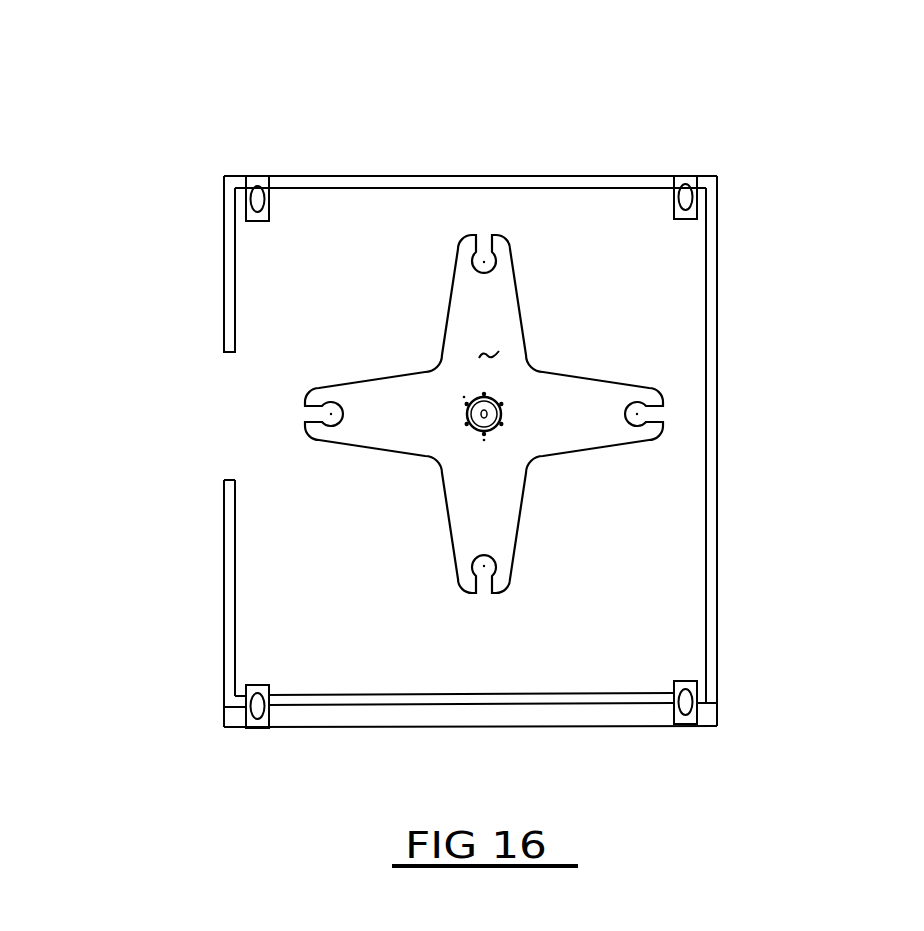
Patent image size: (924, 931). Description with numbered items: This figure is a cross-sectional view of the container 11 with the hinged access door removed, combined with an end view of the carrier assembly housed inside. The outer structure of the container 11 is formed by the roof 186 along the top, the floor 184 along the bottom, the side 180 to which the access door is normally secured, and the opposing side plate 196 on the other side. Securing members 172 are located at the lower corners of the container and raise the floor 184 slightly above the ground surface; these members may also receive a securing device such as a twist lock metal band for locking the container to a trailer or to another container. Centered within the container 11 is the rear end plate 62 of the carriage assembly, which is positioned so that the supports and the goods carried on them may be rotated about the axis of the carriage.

The container 11 is at (461, 379).
The rear end plate 62 is at (496, 352).
The securing members 172 is at (257, 703).
The side 180 is at (224, 263).
The floor 184 is at (479, 700).
The roof 186 is at (469, 173).
The opposing side plate 196 is at (712, 284).